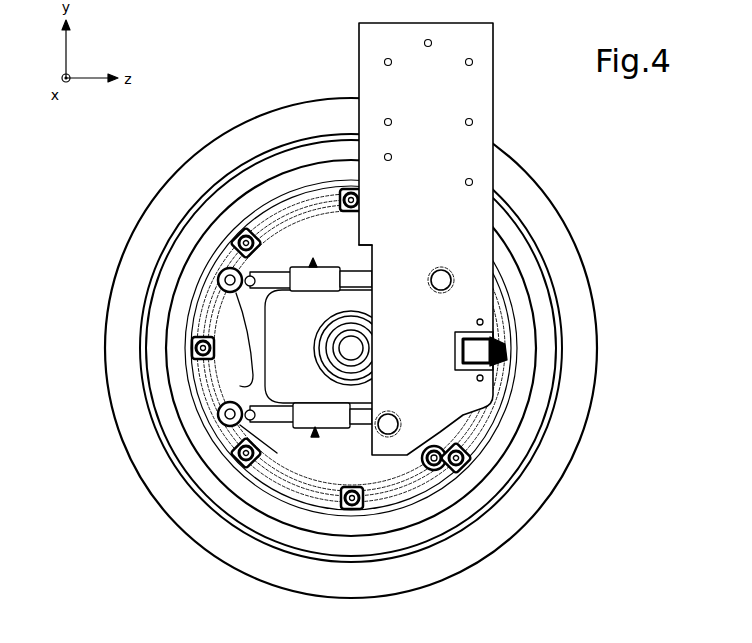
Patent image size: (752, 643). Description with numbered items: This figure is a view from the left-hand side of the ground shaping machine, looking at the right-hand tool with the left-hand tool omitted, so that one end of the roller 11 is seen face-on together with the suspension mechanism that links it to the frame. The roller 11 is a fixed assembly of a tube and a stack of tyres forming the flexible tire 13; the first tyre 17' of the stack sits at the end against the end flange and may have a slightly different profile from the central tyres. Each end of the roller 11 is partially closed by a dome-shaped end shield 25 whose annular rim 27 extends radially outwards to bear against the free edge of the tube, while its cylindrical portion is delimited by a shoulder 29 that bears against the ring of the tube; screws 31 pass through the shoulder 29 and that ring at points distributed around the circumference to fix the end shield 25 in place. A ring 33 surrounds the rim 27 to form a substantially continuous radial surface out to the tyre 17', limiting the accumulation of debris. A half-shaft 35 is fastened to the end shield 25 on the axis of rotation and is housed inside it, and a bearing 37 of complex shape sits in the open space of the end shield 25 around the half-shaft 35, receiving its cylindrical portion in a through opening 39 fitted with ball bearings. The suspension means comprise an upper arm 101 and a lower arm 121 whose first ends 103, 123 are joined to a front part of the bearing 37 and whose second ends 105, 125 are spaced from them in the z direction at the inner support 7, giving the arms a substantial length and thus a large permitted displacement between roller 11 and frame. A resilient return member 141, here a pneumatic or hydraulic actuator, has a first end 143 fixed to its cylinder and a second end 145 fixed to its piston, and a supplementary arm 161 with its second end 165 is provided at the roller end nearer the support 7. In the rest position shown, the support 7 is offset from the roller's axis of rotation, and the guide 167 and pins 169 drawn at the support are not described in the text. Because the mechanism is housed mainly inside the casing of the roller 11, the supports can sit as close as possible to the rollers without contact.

The inner support 7 is at (370, 42).
The roller 11 is at (112, 248).
The flexible tire 13 is at (513, 164).
The first tyre 17' is at (158, 539).
The end shield 25 is at (113, 422).
The annular rim 27 is at (333, 530).
The shoulder 29 is at (313, 438).
The screws 31 is at (313, 258).
The ring 33 is at (459, 519).
The half-shaft 35 is at (342, 357).
The bearing 37 is at (283, 326).
The through opening 39 is at (362, 238).
The upper arm 101 is at (236, 182).
The first end of upper arm 103 is at (215, 278).
The second end of upper arm 105 is at (389, 267).
The lower arm 121 is at (318, 458).
The first end of lower arm 123 is at (245, 383).
The second end of lower arm 125 is at (388, 412).
The resilient return member 141 is at (472, 462).
The first end of actuator 143 is at (470, 445).
The second end of actuator 145 is at (441, 268).
The supplementary arm 161 is at (536, 404).
The second end of supplementary arm 165 is at (500, 322).
The slider 167 is at (456, 360).
The pins 169 is at (476, 322).